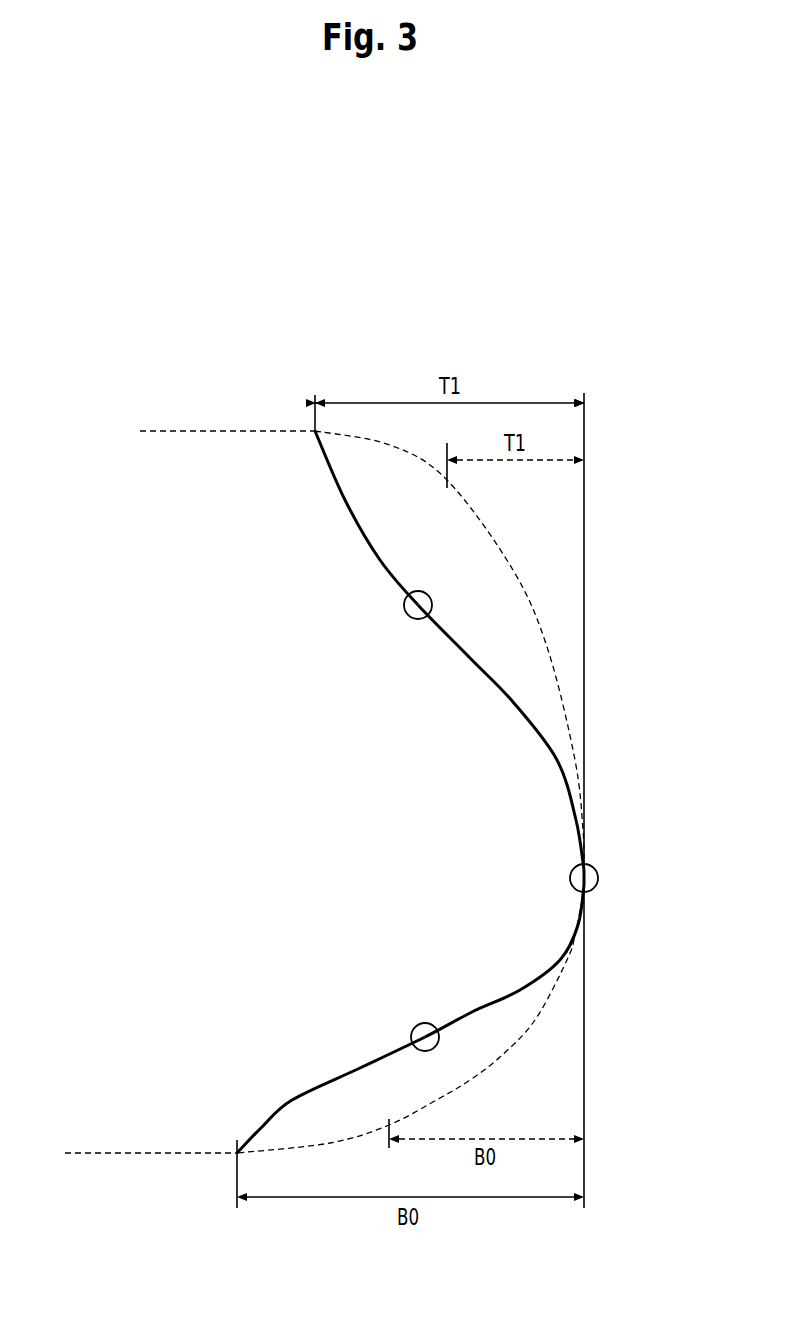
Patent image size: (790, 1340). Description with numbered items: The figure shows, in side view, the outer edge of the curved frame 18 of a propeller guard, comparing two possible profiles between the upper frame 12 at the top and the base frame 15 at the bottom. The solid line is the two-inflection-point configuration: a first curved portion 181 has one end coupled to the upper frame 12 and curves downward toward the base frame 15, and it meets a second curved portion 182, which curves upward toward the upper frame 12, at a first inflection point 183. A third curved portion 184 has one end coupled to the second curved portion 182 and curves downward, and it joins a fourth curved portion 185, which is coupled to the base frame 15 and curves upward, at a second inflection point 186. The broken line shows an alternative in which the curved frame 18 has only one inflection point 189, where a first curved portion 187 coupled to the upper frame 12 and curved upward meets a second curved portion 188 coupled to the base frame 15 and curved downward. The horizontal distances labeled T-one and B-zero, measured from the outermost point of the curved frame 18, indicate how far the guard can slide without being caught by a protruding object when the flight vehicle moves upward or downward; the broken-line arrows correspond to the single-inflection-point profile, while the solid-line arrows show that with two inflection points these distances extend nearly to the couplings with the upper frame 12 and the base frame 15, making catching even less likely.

The upper frame 12 is at (203, 431).
The base frame 15 is at (120, 1153).
The curved frame 18 is at (468, 312).
The first curved portion 181 is at (352, 518).
The second curved portion 182 is at (513, 702).
The first inflection point 183 is at (404, 616).
The third curved portion 184 is at (472, 1012).
The fourth curved portion 185 is at (282, 1105).
The second inflection point 186 is at (415, 1026).
The first curved portion 187 is at (505, 548).
The second curved portion 188 is at (522, 1044).
The inflection point 189 is at (600, 878).